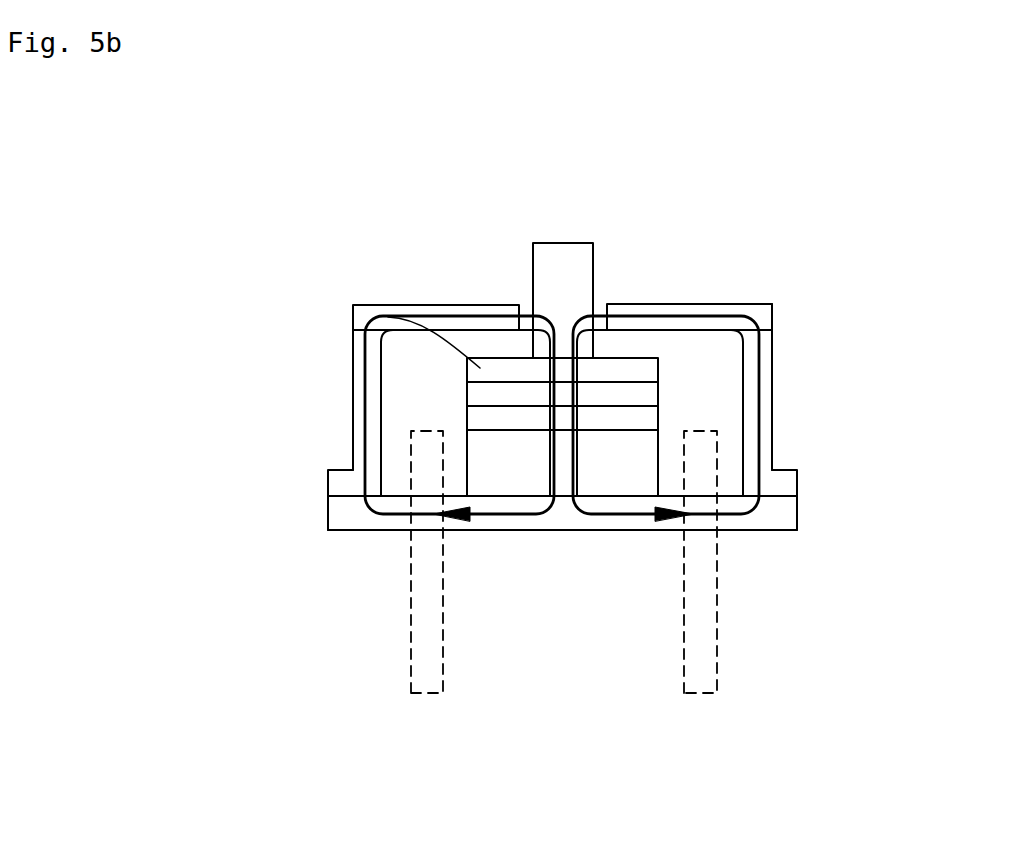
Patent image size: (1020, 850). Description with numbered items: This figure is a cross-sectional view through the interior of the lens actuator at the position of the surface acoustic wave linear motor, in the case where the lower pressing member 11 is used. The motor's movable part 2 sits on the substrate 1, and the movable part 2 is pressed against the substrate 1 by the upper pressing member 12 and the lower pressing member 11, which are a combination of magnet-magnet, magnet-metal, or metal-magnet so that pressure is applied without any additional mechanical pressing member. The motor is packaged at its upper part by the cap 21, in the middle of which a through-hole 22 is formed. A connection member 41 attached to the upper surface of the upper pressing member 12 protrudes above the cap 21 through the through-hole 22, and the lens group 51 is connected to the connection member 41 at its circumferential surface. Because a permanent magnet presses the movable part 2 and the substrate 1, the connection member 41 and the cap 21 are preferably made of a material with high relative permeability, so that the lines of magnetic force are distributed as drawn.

The substrate 1 is at (490, 420).
The movable part 2 is at (478, 398).
The lower pressing member 11 is at (502, 464).
The upper pressing member 12 is at (357, 318).
The cap 21 is at (772, 400).
The through-hole 22 is at (597, 307).
The connection member 41 is at (550, 287).
The lens group 51 is at (710, 317).